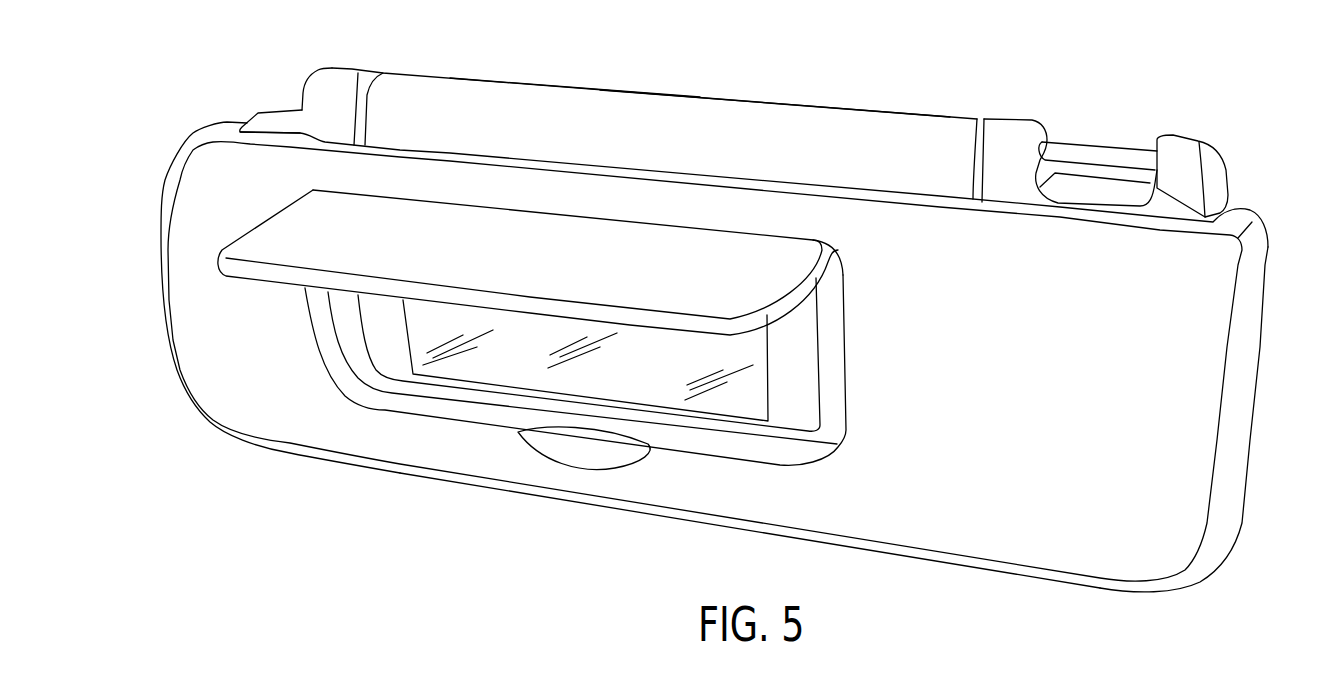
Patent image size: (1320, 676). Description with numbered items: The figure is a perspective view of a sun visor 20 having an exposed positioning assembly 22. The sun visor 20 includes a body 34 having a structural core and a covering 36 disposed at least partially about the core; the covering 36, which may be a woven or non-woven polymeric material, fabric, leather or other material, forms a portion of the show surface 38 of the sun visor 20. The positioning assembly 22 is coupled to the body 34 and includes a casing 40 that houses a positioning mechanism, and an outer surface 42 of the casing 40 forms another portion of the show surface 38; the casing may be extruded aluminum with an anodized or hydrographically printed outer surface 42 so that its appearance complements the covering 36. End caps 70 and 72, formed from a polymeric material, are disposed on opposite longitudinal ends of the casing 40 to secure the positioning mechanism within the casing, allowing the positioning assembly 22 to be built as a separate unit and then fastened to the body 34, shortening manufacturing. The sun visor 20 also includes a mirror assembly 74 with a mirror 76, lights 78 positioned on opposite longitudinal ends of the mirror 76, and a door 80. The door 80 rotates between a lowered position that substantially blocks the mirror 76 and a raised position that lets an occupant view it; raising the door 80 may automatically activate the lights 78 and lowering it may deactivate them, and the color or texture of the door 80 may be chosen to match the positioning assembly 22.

The sun visor 20 is at (125, 149).
The positioning assembly 22 is at (804, 73).
The body 34 is at (1262, 458).
The covering 36 is at (940, 527).
The show surface 38 is at (1028, 507).
The casing 40 is at (527, 128).
The outer surface 42 is at (670, 122).
The end cap 70 is at (1005, 145).
The end cap 72 is at (335, 90).
The mirror assembly 74 is at (866, 328).
The mirror 76 is at (507, 355).
The lights 78 is at (797, 408).
The door 80 is at (753, 267).